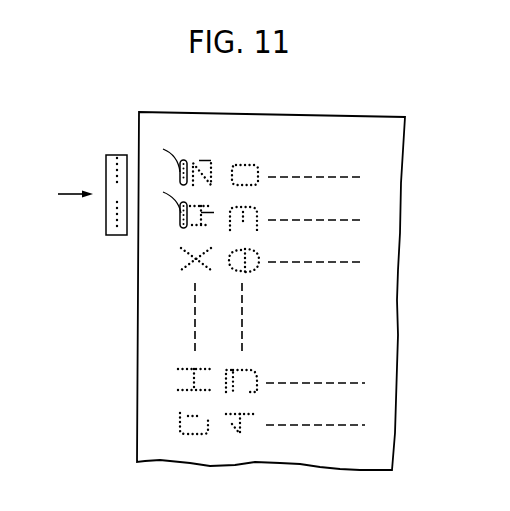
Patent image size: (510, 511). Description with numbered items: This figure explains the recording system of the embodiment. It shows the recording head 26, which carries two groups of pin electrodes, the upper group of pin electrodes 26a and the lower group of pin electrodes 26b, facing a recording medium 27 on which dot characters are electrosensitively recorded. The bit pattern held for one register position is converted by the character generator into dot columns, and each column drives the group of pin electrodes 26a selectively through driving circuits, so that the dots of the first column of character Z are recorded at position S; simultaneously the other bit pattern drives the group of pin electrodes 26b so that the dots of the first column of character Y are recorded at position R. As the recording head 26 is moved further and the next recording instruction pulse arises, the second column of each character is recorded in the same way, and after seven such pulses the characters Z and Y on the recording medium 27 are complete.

The recording head 26 is at (104, 178).
The group of pin electrodes 26a is at (109, 160).
The group of pin electrodes 26b is at (111, 226).
The recording sheet 27 is at (380, 120).